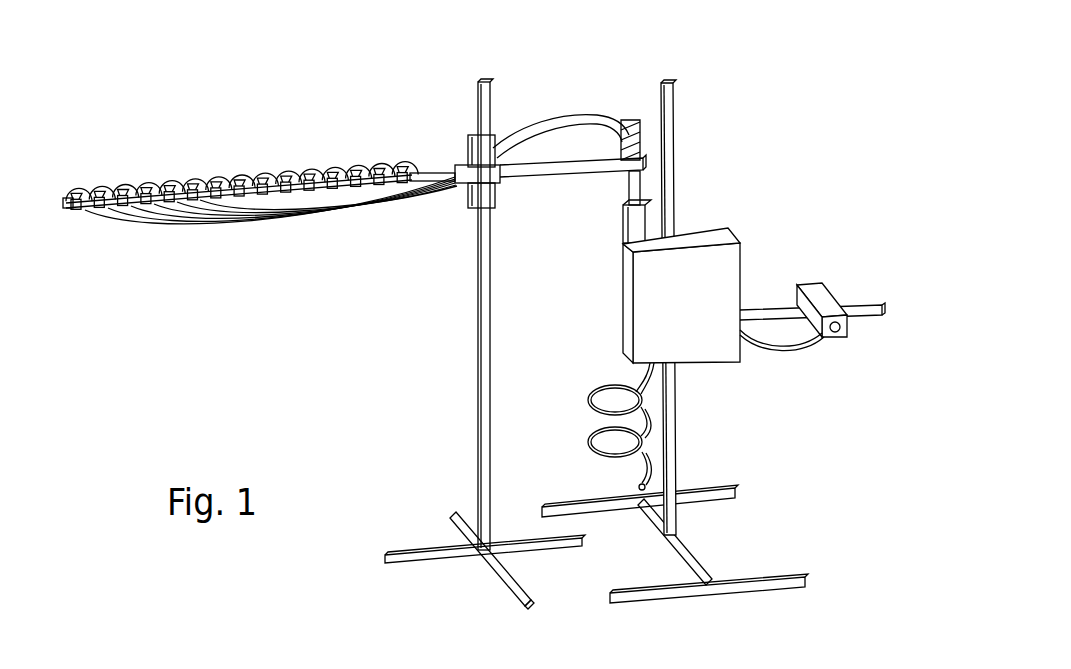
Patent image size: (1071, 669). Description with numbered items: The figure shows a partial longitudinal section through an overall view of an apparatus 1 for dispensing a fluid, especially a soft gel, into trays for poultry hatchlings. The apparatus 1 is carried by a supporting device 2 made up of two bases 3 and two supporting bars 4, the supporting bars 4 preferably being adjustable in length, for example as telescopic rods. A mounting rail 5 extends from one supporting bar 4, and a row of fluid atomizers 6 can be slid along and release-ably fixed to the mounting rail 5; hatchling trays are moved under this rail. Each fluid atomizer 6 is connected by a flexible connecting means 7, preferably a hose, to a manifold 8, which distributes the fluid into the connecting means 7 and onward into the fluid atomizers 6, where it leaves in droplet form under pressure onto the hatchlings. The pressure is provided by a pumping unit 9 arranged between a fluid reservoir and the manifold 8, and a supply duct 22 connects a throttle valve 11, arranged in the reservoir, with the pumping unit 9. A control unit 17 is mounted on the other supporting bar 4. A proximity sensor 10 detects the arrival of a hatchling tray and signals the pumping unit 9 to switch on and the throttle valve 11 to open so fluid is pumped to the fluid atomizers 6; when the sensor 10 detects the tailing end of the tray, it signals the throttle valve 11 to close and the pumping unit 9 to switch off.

The apparatus for dispensing a fluid 1 is at (760, 78).
The supporting device 2 is at (450, 358).
The base 3 is at (497, 582).
The supporting bar 4 is at (485, 435).
The mounting rail 5 is at (438, 177).
The fluid atomizer 6 is at (172, 202).
The flexible connecting means 7 is at (305, 223).
The manifold 8 is at (622, 123).
The pumping unit 9 is at (632, 226).
The proximity sensor 10 is at (820, 300).
The throttle valve 11 is at (640, 486).
The control unit 17 is at (715, 258).
The supply duct 22 is at (590, 398).